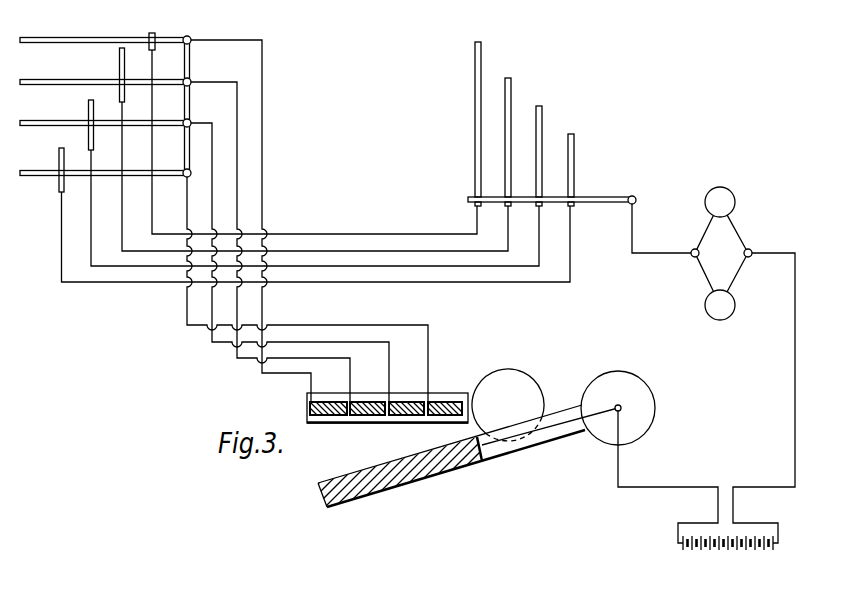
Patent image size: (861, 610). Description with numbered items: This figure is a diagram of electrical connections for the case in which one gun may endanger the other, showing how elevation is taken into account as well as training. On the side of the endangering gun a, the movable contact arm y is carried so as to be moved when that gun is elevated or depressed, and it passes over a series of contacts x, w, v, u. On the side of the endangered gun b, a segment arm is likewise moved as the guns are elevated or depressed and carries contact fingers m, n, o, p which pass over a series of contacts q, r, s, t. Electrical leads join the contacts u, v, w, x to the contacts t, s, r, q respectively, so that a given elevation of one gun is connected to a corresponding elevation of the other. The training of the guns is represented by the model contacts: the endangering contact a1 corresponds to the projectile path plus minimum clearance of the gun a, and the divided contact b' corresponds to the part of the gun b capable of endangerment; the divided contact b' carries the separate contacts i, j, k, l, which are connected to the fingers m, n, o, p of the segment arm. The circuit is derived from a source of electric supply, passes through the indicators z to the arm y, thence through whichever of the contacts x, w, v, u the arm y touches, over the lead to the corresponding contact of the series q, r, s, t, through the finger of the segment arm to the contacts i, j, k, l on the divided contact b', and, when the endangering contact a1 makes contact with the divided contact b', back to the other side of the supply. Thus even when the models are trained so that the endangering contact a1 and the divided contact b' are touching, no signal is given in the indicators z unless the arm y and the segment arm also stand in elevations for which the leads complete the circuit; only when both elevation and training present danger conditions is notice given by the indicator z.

The pivot disk of arm a is at (618, 408).
The contact arm a1 is at (425, 467).
The roller b is at (508, 405).
The contact block b' is at (387, 382).
The contact plate i is at (327, 416).
The contact plate j is at (370, 416).
The contact plate k is at (409, 416).
The contact plate l is at (440, 416).
The contact m is at (190, 37).
The contact n is at (191, 75).
The contact o is at (191, 117).
The contact p is at (185, 168).
The contact bar q is at (154, 47).
The contact bar r is at (119, 62).
The contact bar s is at (94, 105).
The contact bar t is at (64, 157).
The indicator bar u is at (574, 150).
The indicator bar v is at (542, 118).
The indicator bar w is at (511, 88).
The indicator bar x is at (481, 63).
The contact y is at (620, 196).
The electromagnet z is at (749, 301).